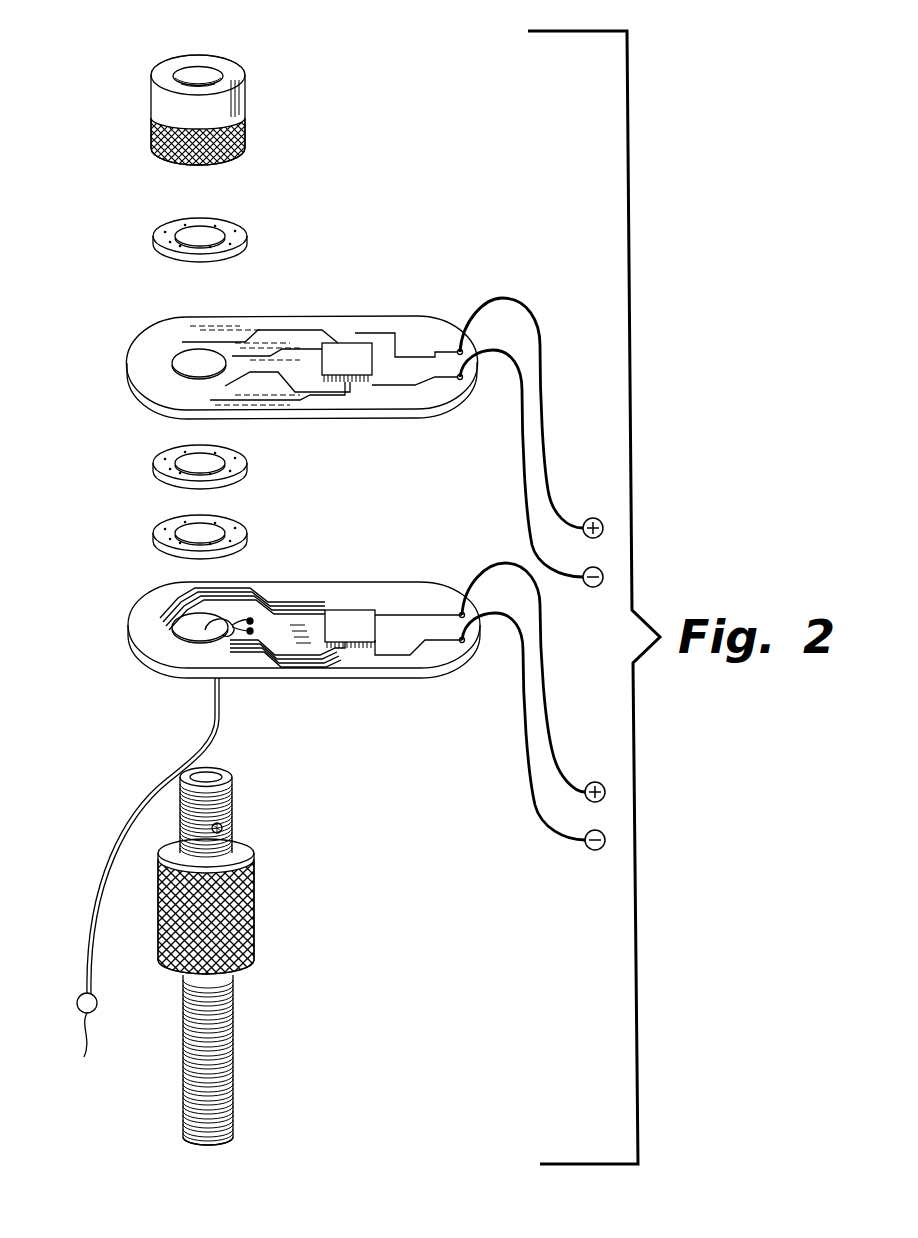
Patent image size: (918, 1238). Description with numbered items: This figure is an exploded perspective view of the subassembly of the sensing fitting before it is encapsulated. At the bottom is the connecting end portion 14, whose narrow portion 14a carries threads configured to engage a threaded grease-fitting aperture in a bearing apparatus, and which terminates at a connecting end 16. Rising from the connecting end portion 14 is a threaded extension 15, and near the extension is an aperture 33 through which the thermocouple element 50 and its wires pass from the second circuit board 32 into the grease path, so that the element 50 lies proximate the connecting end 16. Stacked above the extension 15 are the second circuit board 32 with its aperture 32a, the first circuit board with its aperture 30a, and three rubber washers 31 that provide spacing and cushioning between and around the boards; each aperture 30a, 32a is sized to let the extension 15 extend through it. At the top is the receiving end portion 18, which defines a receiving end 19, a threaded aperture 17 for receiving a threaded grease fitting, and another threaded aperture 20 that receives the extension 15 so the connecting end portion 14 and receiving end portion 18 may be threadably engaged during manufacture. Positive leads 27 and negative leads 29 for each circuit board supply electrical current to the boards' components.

The connecting end portion 14 is at (240, 922).
The narrow portion 14a is at (223, 1047).
The threaded extension 15 is at (230, 797).
The connecting end 16 is at (222, 1143).
The threaded aperture 17 is at (197, 72).
The receiving end portion 18 is at (207, 112).
The receiving end 19 is at (232, 72).
The threaded aperture 20 is at (182, 162).
The positive leads 27 is at (541, 410).
The negative leads 29 is at (522, 475).
The aperture 30a is at (193, 367).
The rubber washers 31 is at (247, 240).
The second circuit board 32 is at (407, 600).
The aperture 32a is at (182, 625).
The aperture 33 is at (223, 828).
The thermocouple element 50 is at (138, 886).